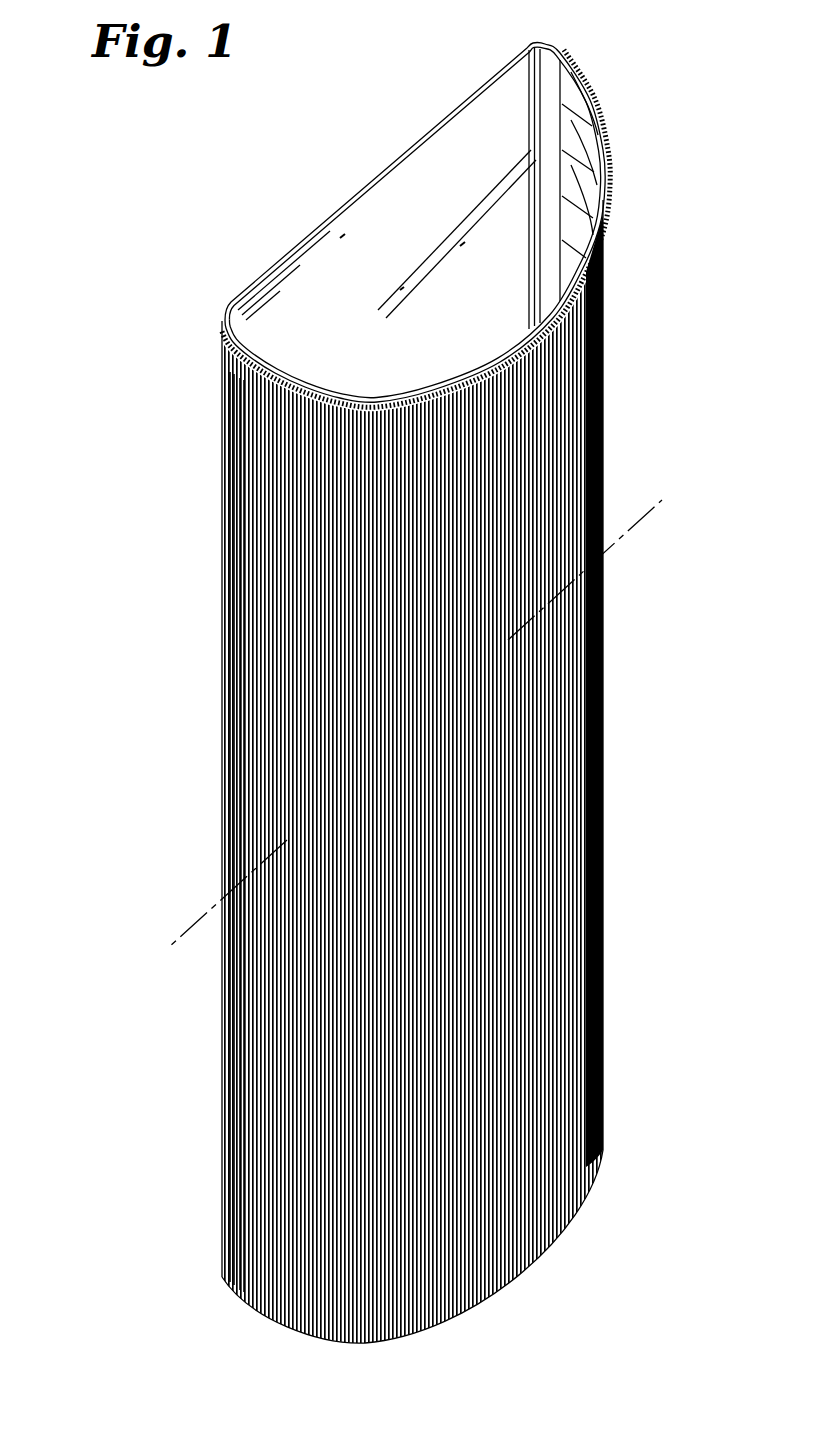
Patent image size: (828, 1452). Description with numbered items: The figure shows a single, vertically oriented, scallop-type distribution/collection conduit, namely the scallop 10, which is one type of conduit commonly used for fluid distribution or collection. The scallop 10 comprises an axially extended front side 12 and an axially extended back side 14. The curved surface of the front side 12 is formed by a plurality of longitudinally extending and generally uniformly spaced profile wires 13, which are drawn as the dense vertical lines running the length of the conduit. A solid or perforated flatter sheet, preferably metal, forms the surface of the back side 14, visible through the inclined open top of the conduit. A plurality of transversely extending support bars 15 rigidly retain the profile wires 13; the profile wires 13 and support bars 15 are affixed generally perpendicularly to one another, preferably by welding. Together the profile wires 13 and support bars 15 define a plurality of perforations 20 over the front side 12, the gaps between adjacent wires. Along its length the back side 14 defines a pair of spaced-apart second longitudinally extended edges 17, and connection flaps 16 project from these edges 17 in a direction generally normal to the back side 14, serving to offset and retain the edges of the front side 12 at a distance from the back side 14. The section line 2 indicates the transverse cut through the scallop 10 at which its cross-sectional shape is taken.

The scallop 10 is at (616, 403).
The front side 12 is at (446, 730).
The profile wires 13 is at (245, 576).
The perforations 20 is at (242, 448).
The back side 14 is at (338, 203).
The support bars 15 is at (600, 197).
The connection flaps 16 is at (556, 51).
The second longitudinally extended edges 17 is at (534, 42).
The section line 2- 2 is at (648, 493).